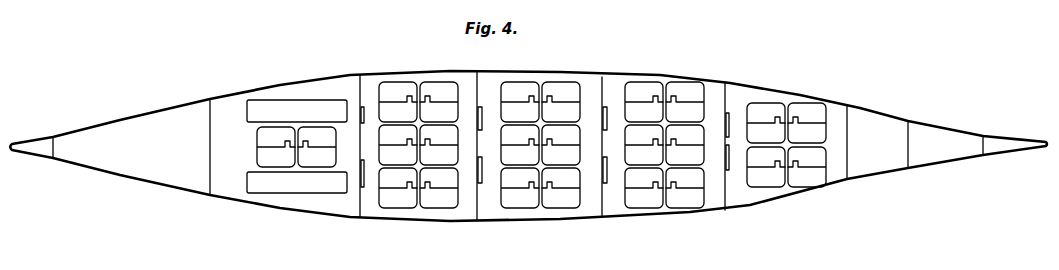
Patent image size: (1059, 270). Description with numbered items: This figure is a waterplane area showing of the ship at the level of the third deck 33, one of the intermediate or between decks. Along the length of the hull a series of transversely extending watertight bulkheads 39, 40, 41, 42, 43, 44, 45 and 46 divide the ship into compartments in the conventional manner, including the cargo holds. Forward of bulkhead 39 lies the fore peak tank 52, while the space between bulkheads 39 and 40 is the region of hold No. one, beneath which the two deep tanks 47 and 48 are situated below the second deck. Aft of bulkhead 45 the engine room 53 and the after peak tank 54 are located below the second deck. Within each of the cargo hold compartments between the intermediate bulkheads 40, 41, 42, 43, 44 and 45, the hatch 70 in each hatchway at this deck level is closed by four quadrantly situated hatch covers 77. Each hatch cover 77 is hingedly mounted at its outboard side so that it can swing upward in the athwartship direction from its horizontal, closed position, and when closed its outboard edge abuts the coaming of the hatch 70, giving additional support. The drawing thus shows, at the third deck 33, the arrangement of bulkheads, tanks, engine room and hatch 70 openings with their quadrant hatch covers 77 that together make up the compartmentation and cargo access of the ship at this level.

The third deck 33 is at (838, 98).
The watertight bulkhead 39 is at (981, 155).
The watertight bulkhead 40 is at (846, 183).
The watertight bulkhead 41 is at (724, 210).
The watertight bulkhead 42 is at (602, 210).
The watertight bulkhead 43 is at (477, 217).
The watertight bulkhead 44 is at (360, 208).
The watertight bulkhead 45 is at (207, 178).
The watertight bulkhead 46 is at (56, 159).
The deep tank 47 is at (884, 156).
The deep tank 48 is at (950, 156).
The fore peak tank 52 is at (998, 143).
The engine room 53 is at (143, 155).
The after peak tank 54 is at (33, 144).
The hatch 70 is at (257, 144).
The hatch cover 77 is at (310, 133).